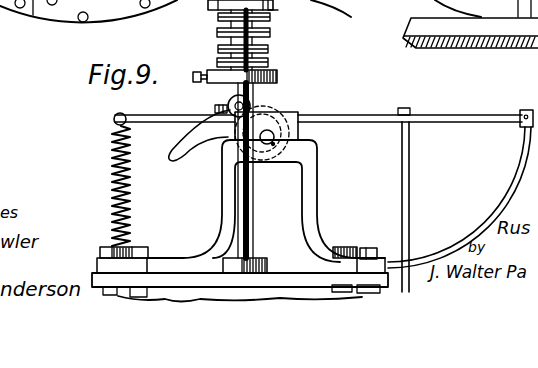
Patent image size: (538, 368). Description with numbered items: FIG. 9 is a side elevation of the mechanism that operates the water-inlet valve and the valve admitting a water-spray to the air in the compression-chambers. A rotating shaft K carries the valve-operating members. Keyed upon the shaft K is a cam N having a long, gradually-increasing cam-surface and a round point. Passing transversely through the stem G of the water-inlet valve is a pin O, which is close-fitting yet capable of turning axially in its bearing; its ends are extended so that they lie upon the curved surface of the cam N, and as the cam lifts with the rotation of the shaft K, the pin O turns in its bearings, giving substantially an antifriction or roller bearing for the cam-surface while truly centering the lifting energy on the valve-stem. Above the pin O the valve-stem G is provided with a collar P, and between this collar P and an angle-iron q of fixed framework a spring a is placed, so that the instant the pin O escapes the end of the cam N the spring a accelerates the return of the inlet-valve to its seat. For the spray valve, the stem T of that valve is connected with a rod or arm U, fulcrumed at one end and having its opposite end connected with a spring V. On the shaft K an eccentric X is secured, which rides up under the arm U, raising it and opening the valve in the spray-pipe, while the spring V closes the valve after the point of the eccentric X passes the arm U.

The angle-iron q is at (207, 8).
The spring a is at (223, 53).
The collar P is at (262, 91).
The pin O is at (230, 103).
The cam N is at (190, 152).
The shaft K is at (269, 131).
The eccentric X is at (265, 146).
The rod or arm U is at (323, 177).
The valve stem T is at (404, 203).
The spring V is at (110, 173).
The valve stem G is at (240, 221).